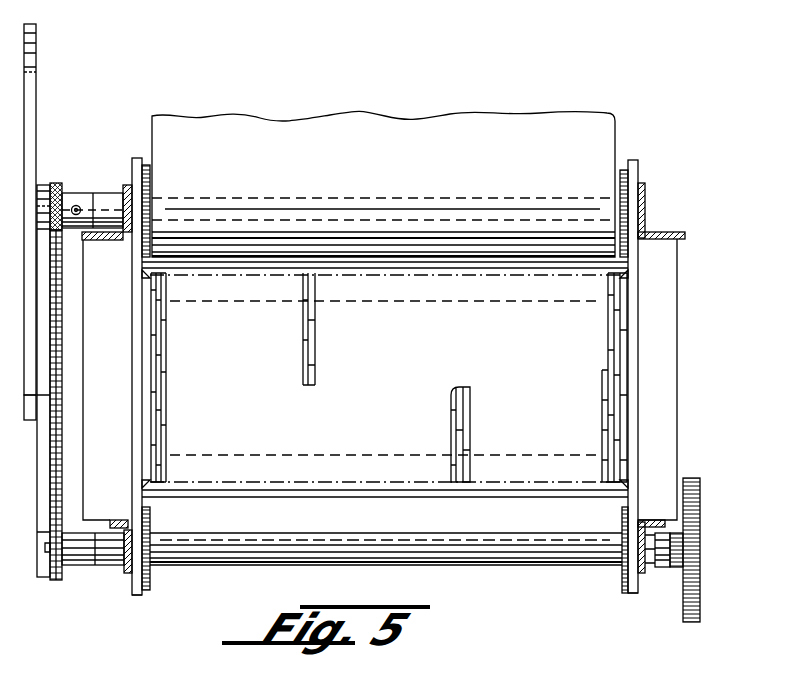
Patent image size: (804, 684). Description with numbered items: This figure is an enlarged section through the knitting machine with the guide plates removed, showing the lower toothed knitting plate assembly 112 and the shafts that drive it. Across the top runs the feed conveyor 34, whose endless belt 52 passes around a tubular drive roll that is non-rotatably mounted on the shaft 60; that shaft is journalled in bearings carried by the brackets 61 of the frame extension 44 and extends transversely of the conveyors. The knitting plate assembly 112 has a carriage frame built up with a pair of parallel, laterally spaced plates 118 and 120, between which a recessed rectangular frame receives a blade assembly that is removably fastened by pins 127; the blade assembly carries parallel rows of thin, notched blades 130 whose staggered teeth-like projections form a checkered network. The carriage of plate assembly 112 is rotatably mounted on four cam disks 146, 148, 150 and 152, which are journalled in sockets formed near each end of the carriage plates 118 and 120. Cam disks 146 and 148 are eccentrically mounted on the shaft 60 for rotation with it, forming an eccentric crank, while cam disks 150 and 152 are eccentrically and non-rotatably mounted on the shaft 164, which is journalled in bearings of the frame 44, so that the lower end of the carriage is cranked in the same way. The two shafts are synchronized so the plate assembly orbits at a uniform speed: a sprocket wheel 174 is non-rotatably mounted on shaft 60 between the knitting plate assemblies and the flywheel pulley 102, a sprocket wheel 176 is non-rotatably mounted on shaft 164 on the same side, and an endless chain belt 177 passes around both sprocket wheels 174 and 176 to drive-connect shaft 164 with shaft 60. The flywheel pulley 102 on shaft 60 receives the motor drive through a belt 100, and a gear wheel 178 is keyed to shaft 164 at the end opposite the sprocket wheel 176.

The flywheel pulley 102 is at (37, 30).
The belt 100 is at (33, 425).
The endless chain belt 177 is at (50, 507).
The sprocket wheel 174 is at (60, 183).
The sprocket wheel 176 is at (58, 580).
The shaft 60 is at (78, 193).
The brackets 61 is at (125, 185).
The frame extension 44 is at (678, 272).
The carriage plate 120 is at (132, 350).
The cam disk 150 is at (143, 595).
The cam disk 146 is at (146, 178).
The carriage plate 118 is at (640, 316).
The cam disk 152 is at (630, 594).
The cam disk 148 is at (620, 176).
The feed conveyor 34 is at (383, 162).
The endless belt 52 is at (360, 108).
The toothed knitting plate assembly 112 is at (272, 497).
The pins 127 is at (148, 378).
The blades 130 is at (469, 425).
The shaft 164 is at (212, 555).
The gear wheel 178 is at (700, 483).